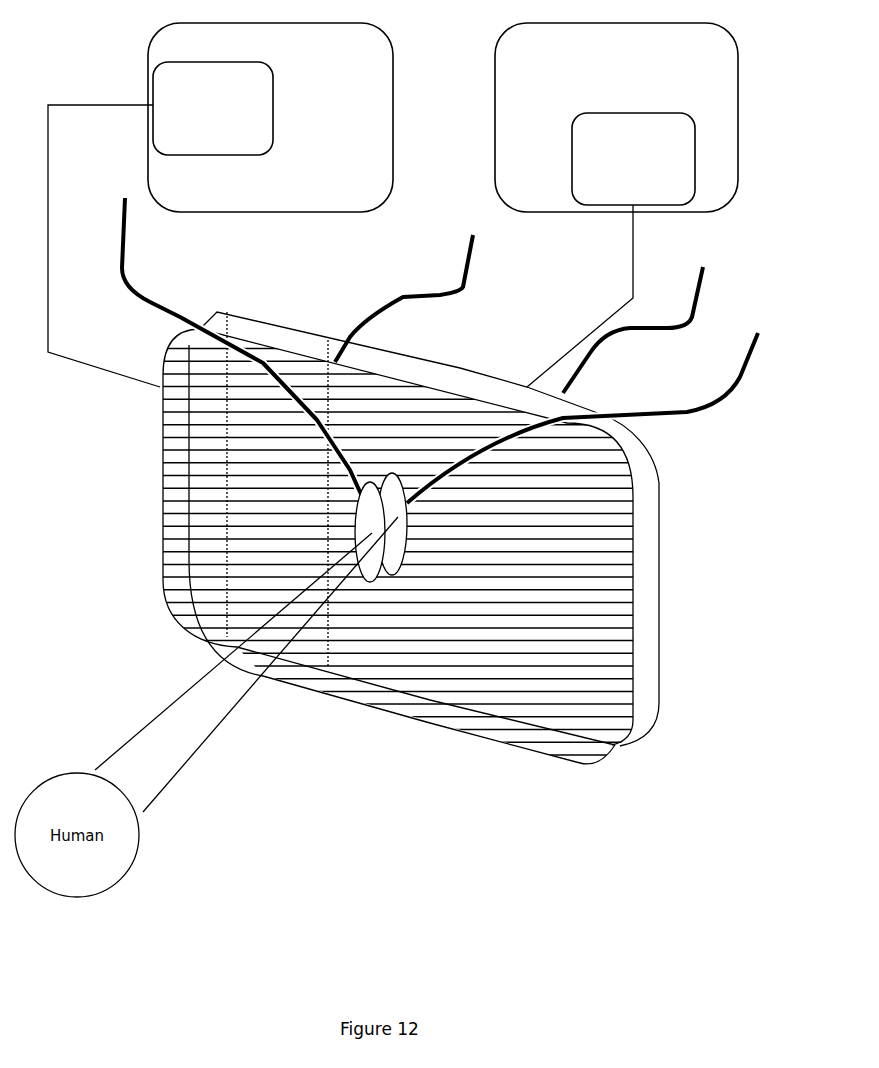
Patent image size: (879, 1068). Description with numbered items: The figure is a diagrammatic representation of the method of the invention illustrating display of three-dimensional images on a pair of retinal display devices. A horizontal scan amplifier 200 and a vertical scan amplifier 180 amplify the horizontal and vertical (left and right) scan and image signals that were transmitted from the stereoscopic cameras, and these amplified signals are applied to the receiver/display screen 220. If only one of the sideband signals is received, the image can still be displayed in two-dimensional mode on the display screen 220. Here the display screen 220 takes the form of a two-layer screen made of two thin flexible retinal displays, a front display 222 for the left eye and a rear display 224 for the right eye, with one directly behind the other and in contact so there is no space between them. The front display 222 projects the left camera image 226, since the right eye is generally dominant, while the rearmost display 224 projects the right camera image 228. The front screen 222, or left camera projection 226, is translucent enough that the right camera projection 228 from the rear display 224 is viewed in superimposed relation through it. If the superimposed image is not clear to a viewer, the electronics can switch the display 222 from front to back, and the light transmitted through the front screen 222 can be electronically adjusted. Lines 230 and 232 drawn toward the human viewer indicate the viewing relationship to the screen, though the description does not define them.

The vertical scan amplifier 180 is at (505, 175).
The horizontal scan amplifier 200 is at (378, 105).
The receiver/display screen 220 is at (155, 433).
The front retinal display screen 222 is at (413, 286).
The rear retinal display screen 224 is at (642, 316).
The left camera image 226 is at (225, 341).
The right camera image 228 is at (596, 407).
The first line of sight 230 is at (163, 708).
The second line of sight 232 is at (225, 723).